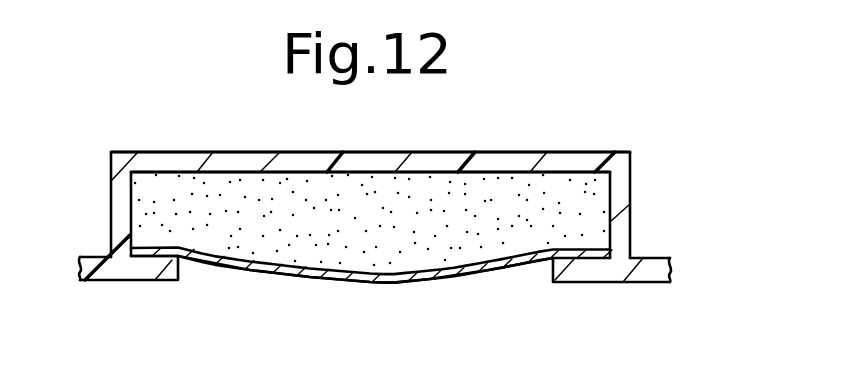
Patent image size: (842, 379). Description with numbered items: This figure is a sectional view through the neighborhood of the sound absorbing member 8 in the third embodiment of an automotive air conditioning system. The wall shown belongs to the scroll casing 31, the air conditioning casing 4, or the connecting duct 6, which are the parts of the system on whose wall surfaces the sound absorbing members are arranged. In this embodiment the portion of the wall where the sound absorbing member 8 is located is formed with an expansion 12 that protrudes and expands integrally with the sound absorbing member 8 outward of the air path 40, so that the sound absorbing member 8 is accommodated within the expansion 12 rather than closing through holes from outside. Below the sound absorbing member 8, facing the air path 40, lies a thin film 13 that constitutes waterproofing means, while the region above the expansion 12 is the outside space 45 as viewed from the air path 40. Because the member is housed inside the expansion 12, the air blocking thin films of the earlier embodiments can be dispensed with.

The scroll casing 31 is at (359, 200).
The air conditioning casing 4 is at (359, 200).
The connecting duct 6 is at (92, 257).
The sound absorbing member 8 is at (255, 192).
The expansion 12 is at (318, 154).
The thin film 13 is at (245, 266).
The air path 40 is at (388, 326).
The outside space 45 is at (469, 133).